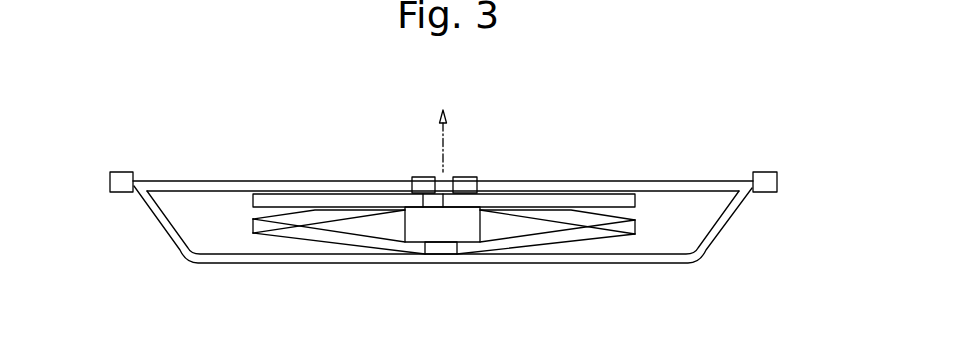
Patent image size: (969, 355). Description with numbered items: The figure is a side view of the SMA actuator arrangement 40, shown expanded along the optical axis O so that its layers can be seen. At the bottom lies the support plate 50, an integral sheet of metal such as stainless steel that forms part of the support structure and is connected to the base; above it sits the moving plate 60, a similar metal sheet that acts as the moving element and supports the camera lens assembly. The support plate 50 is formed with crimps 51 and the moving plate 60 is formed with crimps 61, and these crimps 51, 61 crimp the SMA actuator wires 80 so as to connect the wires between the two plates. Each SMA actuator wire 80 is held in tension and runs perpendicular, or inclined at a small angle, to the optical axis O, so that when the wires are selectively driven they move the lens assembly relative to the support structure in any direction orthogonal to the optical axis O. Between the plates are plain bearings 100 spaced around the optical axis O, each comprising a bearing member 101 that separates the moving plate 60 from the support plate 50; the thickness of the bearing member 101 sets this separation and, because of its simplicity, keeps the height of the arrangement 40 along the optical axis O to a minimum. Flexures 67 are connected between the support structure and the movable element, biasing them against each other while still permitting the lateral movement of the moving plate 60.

The SMA actuator arrangement 40 is at (138, 277).
The support plate 50 is at (663, 263).
The crimps 51 is at (778, 181).
The moving plate 60 is at (612, 200).
The crimps 61 is at (465, 177).
The flexures 67 is at (540, 210).
The SMA actuator wires 80 is at (710, 184).
The plain bearings 100 is at (449, 240).
The bearing member 101 is at (420, 177).
The optical axis O is at (447, 131).